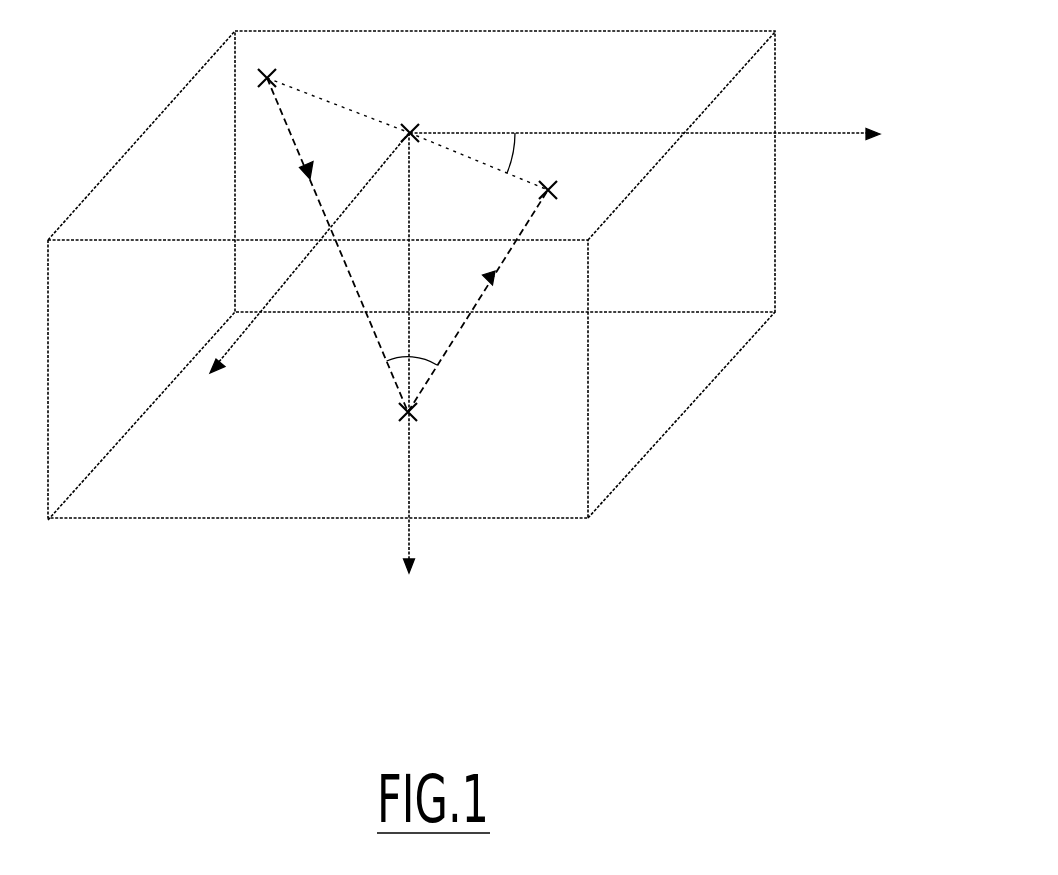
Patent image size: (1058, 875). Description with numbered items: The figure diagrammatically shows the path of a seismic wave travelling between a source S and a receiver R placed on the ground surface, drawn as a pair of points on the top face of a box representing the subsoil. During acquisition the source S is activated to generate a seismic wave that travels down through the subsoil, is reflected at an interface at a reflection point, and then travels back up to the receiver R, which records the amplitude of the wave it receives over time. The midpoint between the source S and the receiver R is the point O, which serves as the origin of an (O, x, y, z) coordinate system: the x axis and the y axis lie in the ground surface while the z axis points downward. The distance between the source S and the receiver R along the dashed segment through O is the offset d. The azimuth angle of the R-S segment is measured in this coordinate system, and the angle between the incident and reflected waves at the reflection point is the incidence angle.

The receiver R is at (279, 64).
The midpoint O is at (419, 115).
The source S is at (562, 192).
The offset d is at (407, 134).
The x axis x is at (309, 268).
The y axis y is at (658, 124).
The z axis z is at (396, 368).